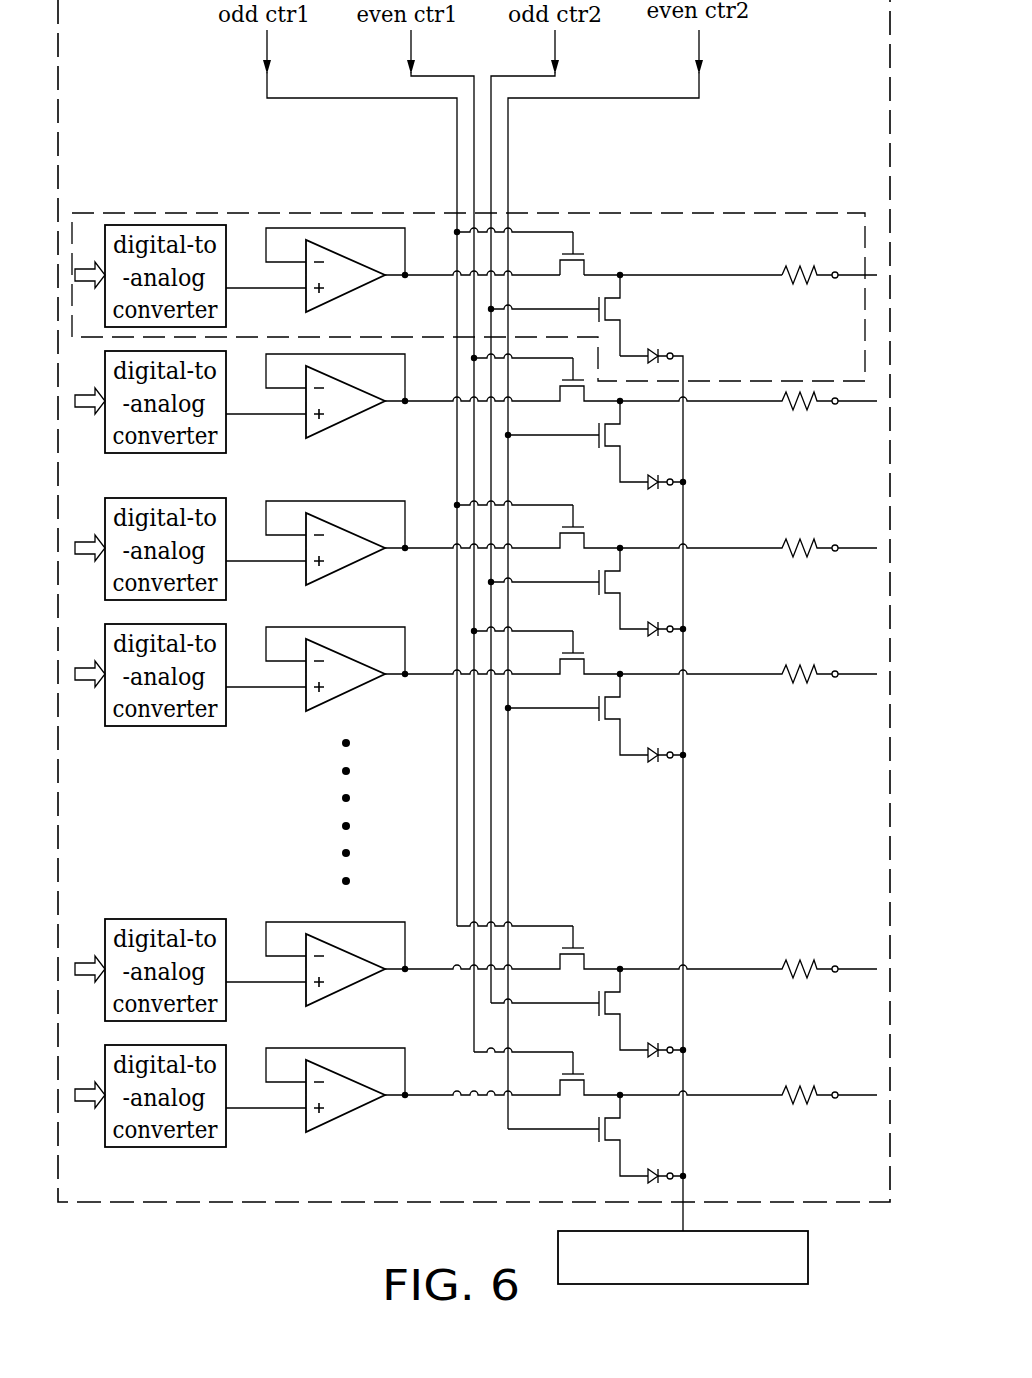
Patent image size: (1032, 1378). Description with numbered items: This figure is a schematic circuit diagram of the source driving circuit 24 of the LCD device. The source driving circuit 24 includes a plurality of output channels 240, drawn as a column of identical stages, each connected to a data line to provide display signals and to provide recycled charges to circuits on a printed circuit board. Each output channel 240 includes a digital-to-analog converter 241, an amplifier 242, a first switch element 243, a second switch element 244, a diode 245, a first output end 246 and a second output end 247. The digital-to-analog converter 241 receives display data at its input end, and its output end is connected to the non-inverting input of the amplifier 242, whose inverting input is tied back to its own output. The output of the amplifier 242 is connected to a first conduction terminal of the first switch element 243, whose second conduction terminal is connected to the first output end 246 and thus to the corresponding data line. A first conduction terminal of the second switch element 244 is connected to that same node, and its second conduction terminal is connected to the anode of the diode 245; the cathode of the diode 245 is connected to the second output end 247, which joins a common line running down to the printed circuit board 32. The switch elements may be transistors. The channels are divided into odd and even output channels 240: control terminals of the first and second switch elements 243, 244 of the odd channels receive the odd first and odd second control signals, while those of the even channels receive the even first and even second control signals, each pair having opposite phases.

The source driving circuit 24 is at (198, 1202).
The output channel 240 is at (155, 213).
The digital-to-analog converter 241 is at (112, 226).
The amplifier 242 is at (312, 274).
The first switch element 243 is at (585, 256).
The second switch element 244 is at (617, 309).
The diode 245 is at (650, 347).
The first output end 246 is at (835, 272).
The second output end 247 is at (672, 347).
The printed circuit board 32 is at (808, 1252).